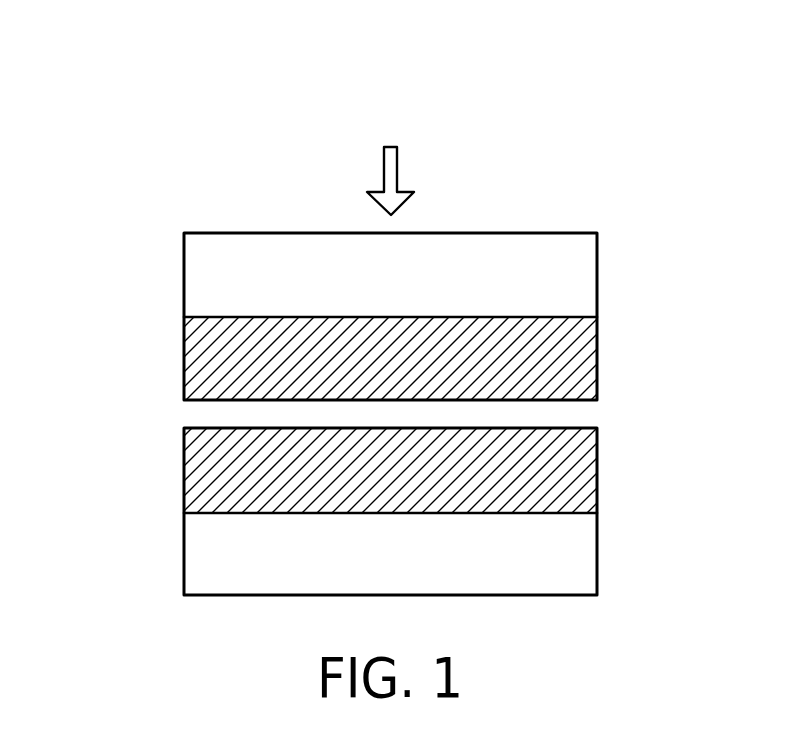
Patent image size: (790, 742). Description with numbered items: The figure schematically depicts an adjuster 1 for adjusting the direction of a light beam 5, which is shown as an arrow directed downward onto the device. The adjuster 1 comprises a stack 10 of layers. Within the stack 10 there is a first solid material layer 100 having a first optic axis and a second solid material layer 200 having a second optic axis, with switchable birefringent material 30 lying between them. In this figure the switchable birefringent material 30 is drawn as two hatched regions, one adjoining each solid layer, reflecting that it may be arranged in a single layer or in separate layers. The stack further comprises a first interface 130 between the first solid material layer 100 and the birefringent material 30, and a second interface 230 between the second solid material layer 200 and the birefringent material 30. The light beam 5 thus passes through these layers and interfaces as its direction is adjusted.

The adjuster 1 is at (127, 189).
The light beam 5 is at (382, 172).
The stack 10 is at (612, 208).
The first solid material layer 100 is at (188, 275).
The first interface 130 is at (566, 317).
The switchable birefringent material 30 is at (188, 358).
The second solid material layer 200 is at (188, 553).
The second interface 230 is at (567, 512).